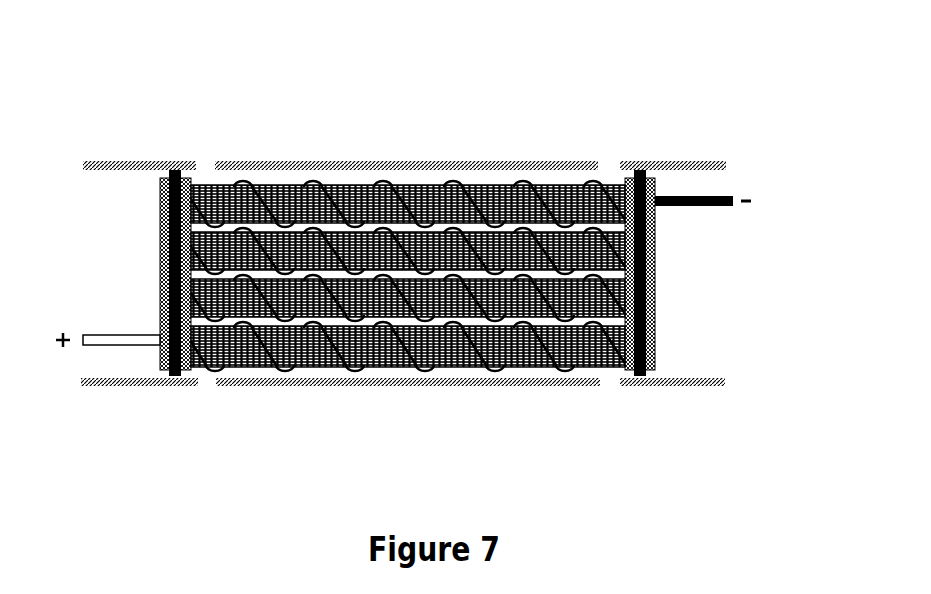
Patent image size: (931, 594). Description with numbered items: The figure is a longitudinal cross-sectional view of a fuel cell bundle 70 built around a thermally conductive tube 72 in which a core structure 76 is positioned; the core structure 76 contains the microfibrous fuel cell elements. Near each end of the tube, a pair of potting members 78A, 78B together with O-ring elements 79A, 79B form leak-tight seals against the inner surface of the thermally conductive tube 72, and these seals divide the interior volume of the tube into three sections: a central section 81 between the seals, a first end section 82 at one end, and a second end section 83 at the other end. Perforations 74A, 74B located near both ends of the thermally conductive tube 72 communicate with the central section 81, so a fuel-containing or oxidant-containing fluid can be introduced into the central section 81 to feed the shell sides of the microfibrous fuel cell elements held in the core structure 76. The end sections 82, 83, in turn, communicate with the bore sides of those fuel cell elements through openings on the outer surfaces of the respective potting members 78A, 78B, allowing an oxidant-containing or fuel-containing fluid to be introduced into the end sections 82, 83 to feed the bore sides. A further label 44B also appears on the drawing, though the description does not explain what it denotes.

The fuel cell bundle 70 is at (373, 110).
The thermally conductive tube 72 is at (430, 160).
The perforation 74A is at (197, 158).
The perforation 74B is at (602, 160).
The core structure 76 is at (297, 272).
The potting member 78A is at (152, 350).
The potting member 78B is at (650, 180).
The O-ring element 79A is at (150, 182).
The O-ring element 79B is at (647, 337).
The central section 81 is at (392, 363).
The first end section 82 is at (138, 253).
The second end section 83 is at (668, 275).
The cell module 44B is at (737, 460).